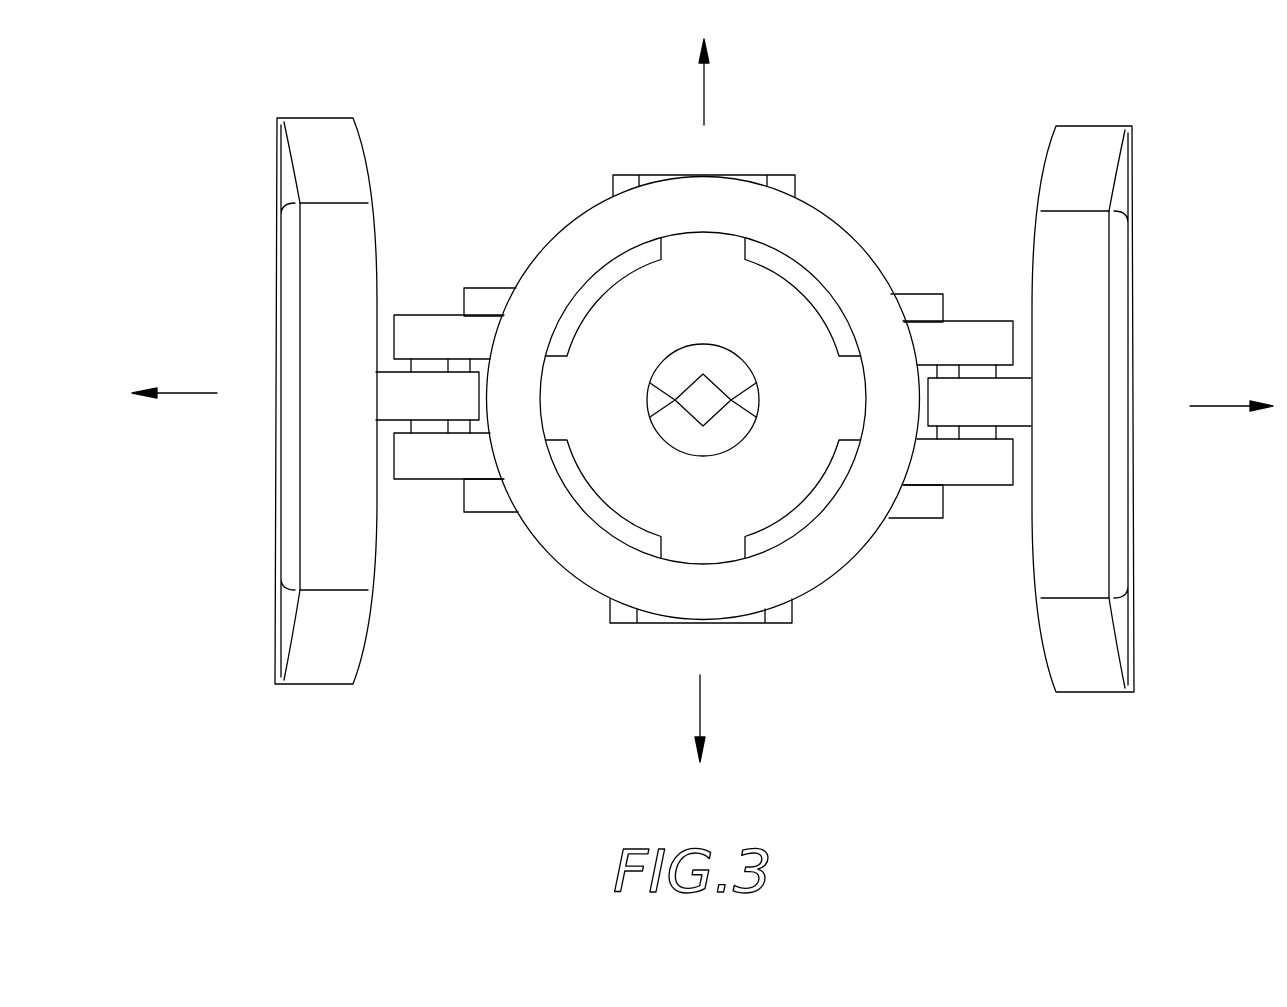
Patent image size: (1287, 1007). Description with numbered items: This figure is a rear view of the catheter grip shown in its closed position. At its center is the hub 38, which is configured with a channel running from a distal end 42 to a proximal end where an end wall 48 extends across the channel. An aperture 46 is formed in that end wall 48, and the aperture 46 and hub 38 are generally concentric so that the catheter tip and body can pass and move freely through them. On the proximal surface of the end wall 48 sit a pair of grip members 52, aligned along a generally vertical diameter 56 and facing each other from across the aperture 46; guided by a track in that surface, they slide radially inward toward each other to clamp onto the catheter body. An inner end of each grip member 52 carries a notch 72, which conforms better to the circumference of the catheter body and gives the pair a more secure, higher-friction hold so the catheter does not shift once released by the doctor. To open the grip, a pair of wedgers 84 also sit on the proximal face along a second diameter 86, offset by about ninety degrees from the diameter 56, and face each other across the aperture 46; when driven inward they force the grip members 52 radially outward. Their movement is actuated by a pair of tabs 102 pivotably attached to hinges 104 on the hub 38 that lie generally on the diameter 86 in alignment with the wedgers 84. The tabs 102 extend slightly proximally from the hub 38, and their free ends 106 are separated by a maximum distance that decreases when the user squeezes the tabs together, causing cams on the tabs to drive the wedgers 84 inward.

The hub 38 is at (836, 252).
The distal end 42 is at (582, 232).
The end wall 48 is at (715, 257).
The aperture 46 is at (672, 448).
The notch 72 is at (689, 385).
The grip members 52 is at (655, 175).
The wedgers 84 is at (488, 288).
The hinges 104 is at (422, 437).
The diameter 86 is at (189, 393).
The tabs 102 is at (317, 160).
The free ends 106 is at (272, 508).
The diameter 56 is at (706, 80).